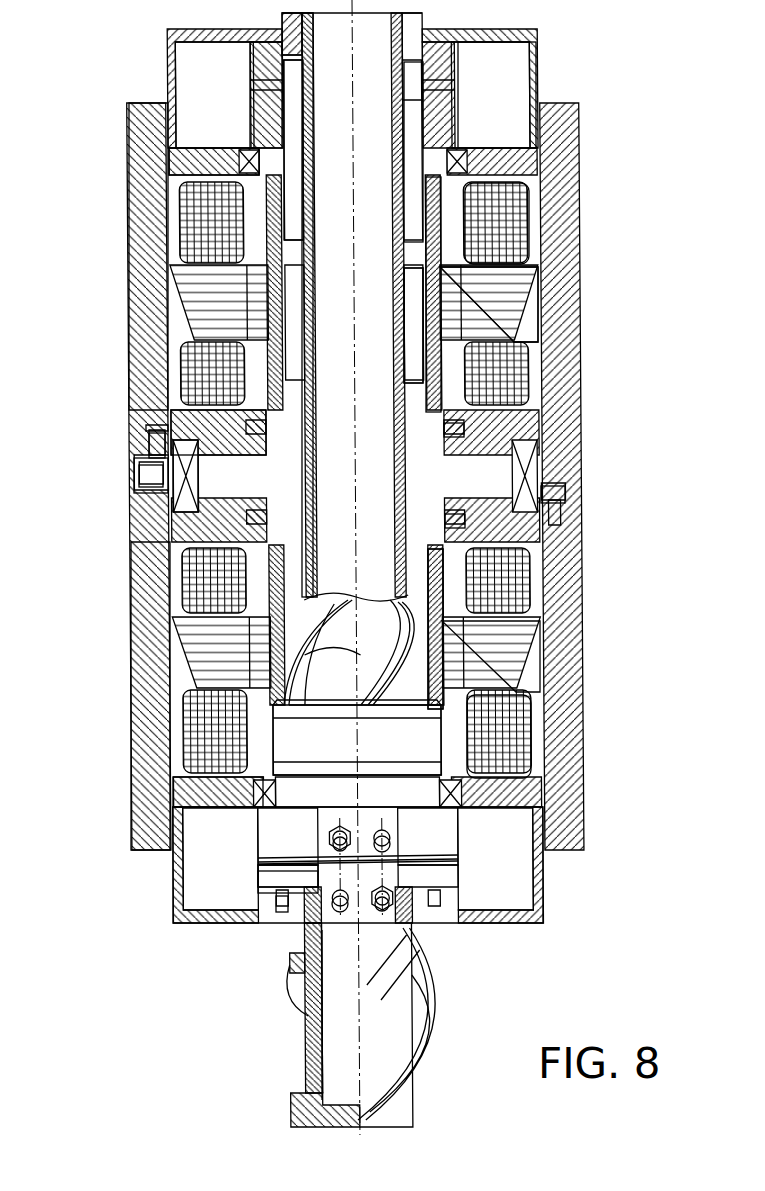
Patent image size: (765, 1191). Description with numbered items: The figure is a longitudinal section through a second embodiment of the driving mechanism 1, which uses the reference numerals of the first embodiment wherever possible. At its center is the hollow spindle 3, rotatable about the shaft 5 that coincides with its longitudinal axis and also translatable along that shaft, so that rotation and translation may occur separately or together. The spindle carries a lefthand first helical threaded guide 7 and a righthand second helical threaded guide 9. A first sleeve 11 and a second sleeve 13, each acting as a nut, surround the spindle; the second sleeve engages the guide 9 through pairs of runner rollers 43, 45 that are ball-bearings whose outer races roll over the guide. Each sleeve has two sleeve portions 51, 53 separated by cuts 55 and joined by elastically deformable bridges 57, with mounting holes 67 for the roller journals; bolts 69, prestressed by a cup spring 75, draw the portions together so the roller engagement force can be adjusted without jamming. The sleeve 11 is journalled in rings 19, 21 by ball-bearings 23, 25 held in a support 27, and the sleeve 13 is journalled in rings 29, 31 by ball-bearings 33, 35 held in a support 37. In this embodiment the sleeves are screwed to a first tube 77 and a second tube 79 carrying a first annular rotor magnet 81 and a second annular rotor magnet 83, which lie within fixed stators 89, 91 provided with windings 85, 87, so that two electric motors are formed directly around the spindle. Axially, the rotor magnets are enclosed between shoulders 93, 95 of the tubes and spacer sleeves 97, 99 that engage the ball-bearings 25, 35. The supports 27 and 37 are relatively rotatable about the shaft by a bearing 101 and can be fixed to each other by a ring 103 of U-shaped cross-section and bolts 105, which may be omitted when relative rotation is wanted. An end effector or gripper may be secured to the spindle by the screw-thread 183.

The driving mechanism 1 is at (125, 421).
The spindle 3 is at (402, 30).
The shaft 5 is at (352, 75).
The first helical threaded guide 7 is at (290, 36).
The second helical threaded guide 9 is at (306, 678).
The first sleeve 11 is at (462, 66).
The second sleeve 13 is at (462, 876).
The ring 19 is at (197, 160).
The ring 21 is at (214, 447).
The ball-bearing 23 is at (443, 162).
The ball-bearing 25 is at (447, 447).
The support 27 is at (147, 273).
The ring 29 is at (185, 790).
The ring 31 is at (187, 537).
The ball-bearing 33 is at (357, 740).
The ball-bearing 35 is at (444, 527).
The support 37 is at (140, 654).
The runner roller 43 is at (381, 918).
The runner roller 45 is at (338, 830).
The sleeve portion 51 is at (258, 52).
The sleeve portion 53 is at (268, 127).
The cut 55 is at (258, 82).
The elastically deformable bridge 57 is at (380, 860).
The mounting hole 67 is at (376, 830).
The bolt 69 is at (278, 922).
The cup spring 75 is at (254, 897).
The first tube 77 is at (437, 317).
The second tube 79 is at (440, 636).
The first annular rotor magnet 81 is at (448, 289).
The second annular rotor magnet 83 is at (400, 676).
The winding 85 is at (512, 224).
The winding 87 is at (528, 726).
The stator 89 is at (512, 318).
The stator 91 is at (520, 631).
The shoulder 93 is at (428, 258).
The shoulder 95 is at (443, 712).
The spacer sleeve 97 is at (443, 369).
The spacer sleeve 99 is at (424, 566).
The bearing 101 is at (184, 501).
The ring 103 is at (140, 470).
The bolt 105 is at (150, 450).
The screw-thread 183 is at (322, 1078).